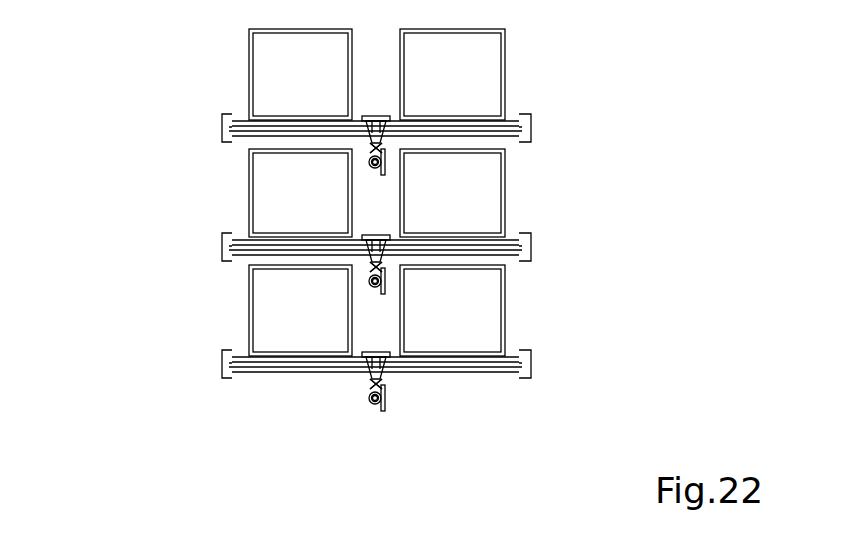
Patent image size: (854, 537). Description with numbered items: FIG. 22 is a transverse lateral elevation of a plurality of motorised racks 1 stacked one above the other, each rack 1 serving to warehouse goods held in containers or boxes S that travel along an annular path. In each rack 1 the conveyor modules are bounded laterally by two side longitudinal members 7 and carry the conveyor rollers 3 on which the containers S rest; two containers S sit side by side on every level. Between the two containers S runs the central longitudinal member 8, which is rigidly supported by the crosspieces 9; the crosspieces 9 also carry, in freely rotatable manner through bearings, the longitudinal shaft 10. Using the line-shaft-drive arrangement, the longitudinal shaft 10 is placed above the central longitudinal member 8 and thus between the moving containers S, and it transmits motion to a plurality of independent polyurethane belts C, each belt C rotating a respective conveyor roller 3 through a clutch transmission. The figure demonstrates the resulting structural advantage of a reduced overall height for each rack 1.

The motorised rack 1 is at (582, 103).
The conveyor rollers 3 is at (303, 127).
The side longitudinal members 7 is at (222, 372).
The central longitudinal member 8 is at (380, 116).
The crosspieces 9 is at (512, 376).
The longitudinal shaft 10 is at (375, 169).
The containers or boxes S is at (270, 50).
The polyurethane belts C is at (371, 150).